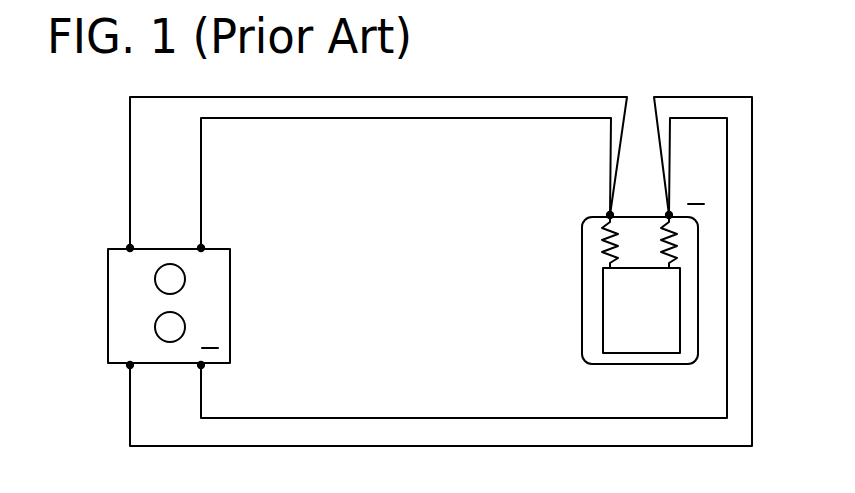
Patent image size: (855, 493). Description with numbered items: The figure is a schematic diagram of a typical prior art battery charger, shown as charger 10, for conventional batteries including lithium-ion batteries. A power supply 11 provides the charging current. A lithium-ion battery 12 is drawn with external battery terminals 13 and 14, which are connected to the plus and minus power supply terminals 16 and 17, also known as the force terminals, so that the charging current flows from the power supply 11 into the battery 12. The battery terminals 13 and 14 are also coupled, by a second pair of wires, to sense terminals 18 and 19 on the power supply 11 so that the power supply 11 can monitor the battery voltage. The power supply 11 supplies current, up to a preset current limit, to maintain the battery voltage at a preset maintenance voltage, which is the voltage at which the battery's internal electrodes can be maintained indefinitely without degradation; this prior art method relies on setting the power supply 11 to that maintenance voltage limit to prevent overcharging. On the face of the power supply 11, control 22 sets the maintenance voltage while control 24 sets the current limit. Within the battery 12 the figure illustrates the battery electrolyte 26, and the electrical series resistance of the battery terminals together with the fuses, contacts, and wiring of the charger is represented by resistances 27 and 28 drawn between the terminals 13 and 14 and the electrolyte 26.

The charger 10 is at (516, 74).
The power supply 11 is at (231, 300).
The lithium-ion battery 12 is at (637, 366).
The external battery terminal 13 is at (610, 213).
The external battery terminal 14 is at (669, 213).
The plus power supply terminal 16 is at (201, 246).
The minus power supply terminal 17 is at (201, 367).
The sense terminal 18 is at (130, 246).
The sense terminal 19 is at (130, 367).
The control 22 is at (155, 279).
The control 24 is at (155, 327).
The battery electrolyte 26 is at (672, 313).
The resistance 27 is at (605, 240).
The resistance 28 is at (674, 246).